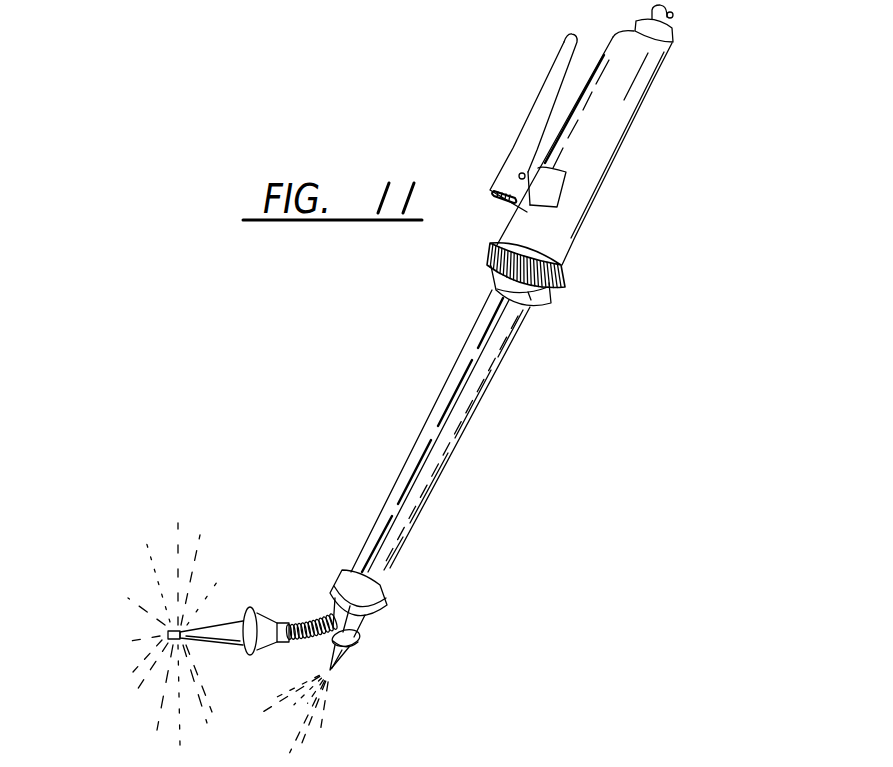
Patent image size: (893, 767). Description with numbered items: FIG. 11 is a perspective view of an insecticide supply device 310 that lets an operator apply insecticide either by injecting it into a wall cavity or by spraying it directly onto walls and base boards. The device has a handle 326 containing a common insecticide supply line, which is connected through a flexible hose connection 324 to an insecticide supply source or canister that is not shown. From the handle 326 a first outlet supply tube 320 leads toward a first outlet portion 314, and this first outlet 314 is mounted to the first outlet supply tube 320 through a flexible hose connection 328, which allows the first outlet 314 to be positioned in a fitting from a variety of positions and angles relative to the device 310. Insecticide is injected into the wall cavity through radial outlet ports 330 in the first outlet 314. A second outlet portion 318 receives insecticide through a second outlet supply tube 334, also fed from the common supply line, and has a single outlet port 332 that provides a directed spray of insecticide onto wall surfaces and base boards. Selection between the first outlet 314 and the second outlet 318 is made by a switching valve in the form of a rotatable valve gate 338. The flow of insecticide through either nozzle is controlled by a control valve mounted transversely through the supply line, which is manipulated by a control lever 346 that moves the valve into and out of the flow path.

The insecticide supply device 310 is at (580, 228).
The flexible hose connection 324 is at (674, 16).
The handle 326 is at (632, 123).
The control lever 346 is at (543, 96).
The rotatable valve gate 338 is at (487, 264).
The first outlet supply tube 320 is at (460, 357).
The second outlet supply tube 334 is at (438, 484).
The second outlet portion 318 is at (360, 648).
The single outlet port 332 is at (333, 672).
The flexible hose connection 328 is at (303, 620).
The first outlet portion 314 is at (246, 652).
The radial outlet ports 330 is at (176, 630).